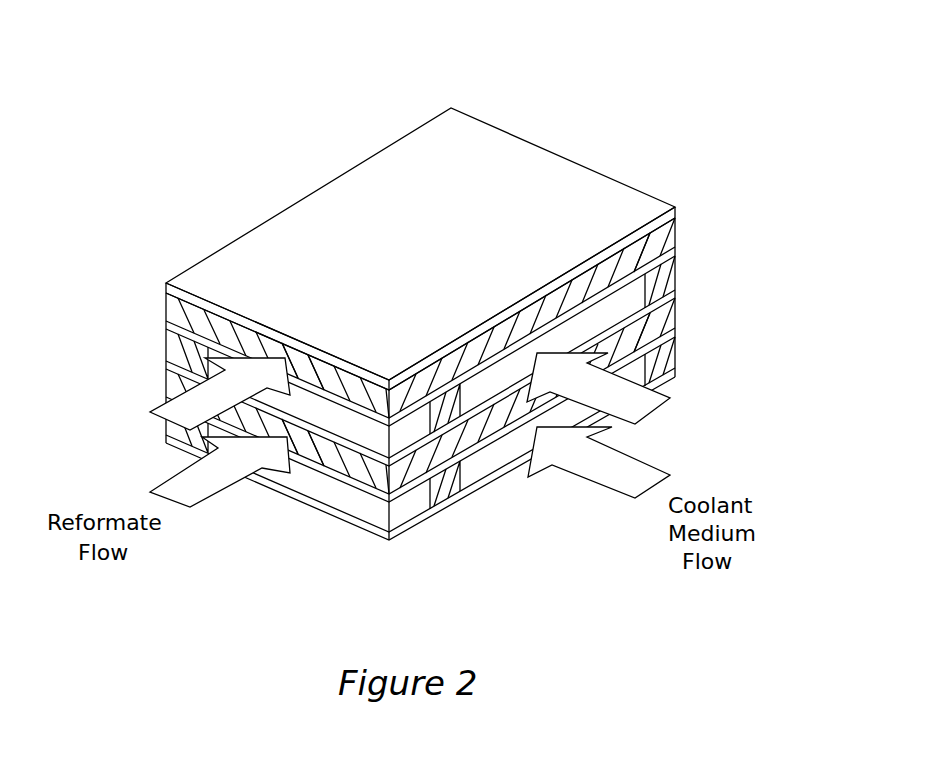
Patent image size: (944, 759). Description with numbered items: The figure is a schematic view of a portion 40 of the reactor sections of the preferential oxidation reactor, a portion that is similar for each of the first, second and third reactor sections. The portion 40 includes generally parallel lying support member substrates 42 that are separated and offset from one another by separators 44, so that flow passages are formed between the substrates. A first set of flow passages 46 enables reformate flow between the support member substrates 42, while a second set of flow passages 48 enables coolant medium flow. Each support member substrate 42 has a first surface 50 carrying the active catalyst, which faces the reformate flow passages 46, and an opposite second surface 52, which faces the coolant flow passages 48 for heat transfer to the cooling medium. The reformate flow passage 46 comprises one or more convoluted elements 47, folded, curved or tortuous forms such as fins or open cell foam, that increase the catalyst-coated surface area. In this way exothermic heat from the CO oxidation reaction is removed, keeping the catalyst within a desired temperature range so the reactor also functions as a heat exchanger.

The portion 40 is at (258, 142).
The support member substrates 42 is at (460, 493).
The separators 44 is at (177, 385).
The first set of flow passages 46 is at (313, 452).
The convoluted element 47 is at (221, 332).
The second set of flow passages 48 is at (497, 455).
The first surface 50 is at (338, 466).
The second surface 52 is at (650, 365).